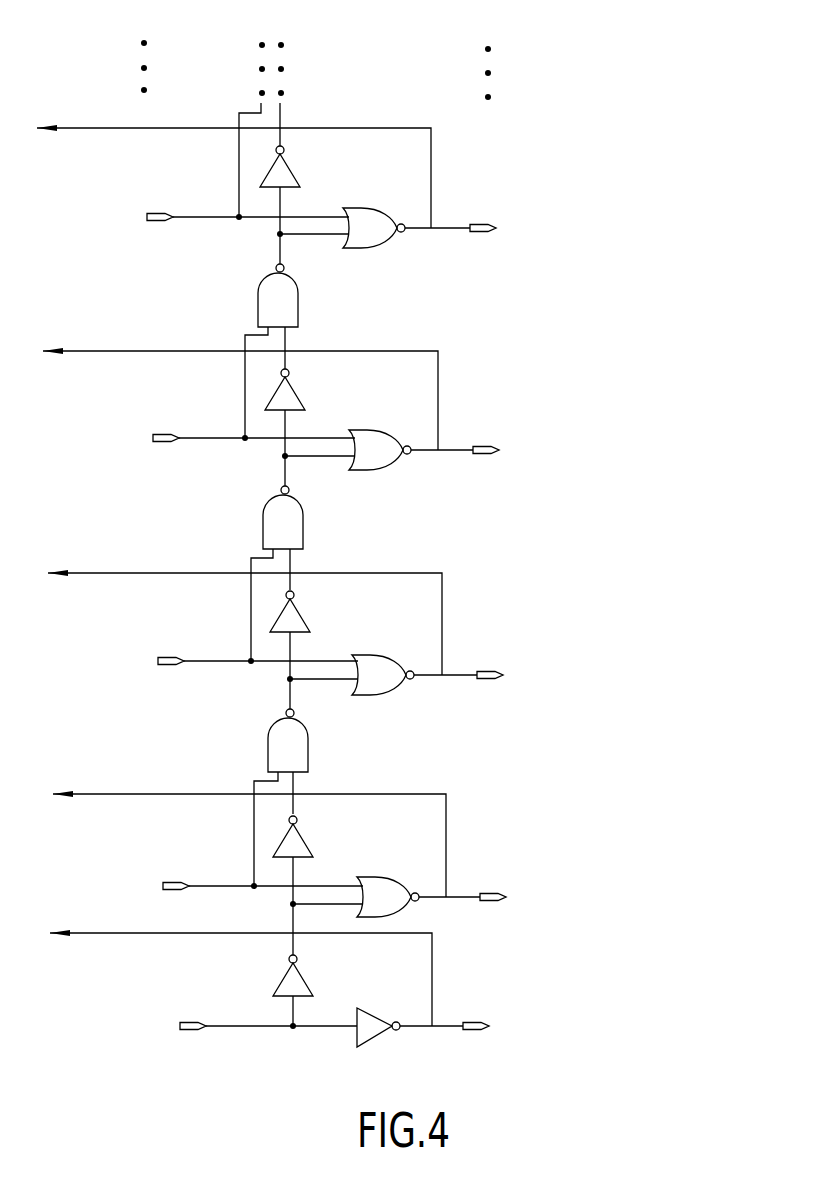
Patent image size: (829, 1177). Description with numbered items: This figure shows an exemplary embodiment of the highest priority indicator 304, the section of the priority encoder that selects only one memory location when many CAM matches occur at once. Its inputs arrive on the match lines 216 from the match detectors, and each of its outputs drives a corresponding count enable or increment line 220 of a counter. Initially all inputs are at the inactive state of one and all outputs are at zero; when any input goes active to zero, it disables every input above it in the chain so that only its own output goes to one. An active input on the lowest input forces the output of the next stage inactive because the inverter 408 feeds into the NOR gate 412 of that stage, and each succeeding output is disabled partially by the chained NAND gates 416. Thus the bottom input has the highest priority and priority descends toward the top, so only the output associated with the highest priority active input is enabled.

The match line 216 is at (223, 615).
The increment line 220 is at (241, 575).
The inverter 408 is at (296, 841).
The NOR gate 412 is at (394, 888).
The NAND gate 416 is at (296, 752).
The highest priority indicator 304 is at (382, 527).